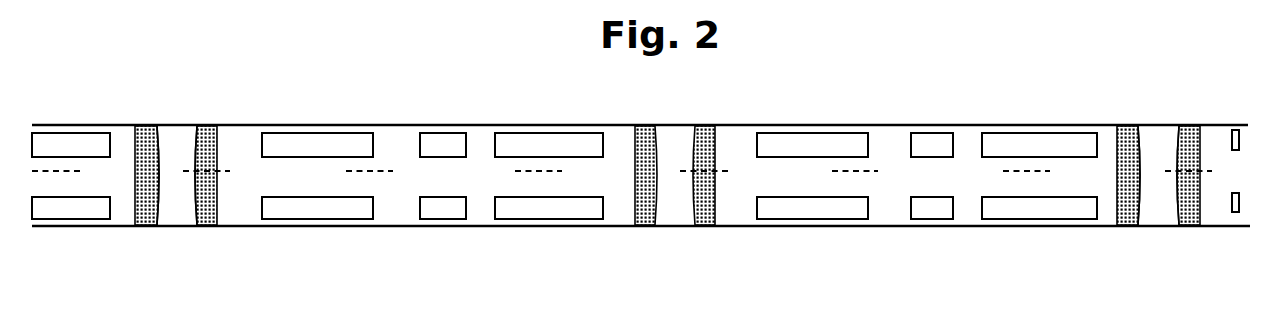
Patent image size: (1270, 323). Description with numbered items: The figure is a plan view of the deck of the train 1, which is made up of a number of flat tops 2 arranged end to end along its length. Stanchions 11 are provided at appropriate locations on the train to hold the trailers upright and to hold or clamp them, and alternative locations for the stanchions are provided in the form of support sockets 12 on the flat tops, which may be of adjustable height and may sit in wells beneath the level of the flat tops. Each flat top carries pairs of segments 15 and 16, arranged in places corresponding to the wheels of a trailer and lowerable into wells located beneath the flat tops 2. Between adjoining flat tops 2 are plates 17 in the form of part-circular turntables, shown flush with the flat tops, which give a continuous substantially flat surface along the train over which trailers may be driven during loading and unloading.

The train 1 is at (256, 125).
The flat tops 2 is at (122, 210).
The stanchions 11 is at (224, 174).
The support sockets 12 is at (380, 173).
The segments 15 is at (533, 141).
The segments 16 is at (315, 139).
The plates 17 is at (182, 143).